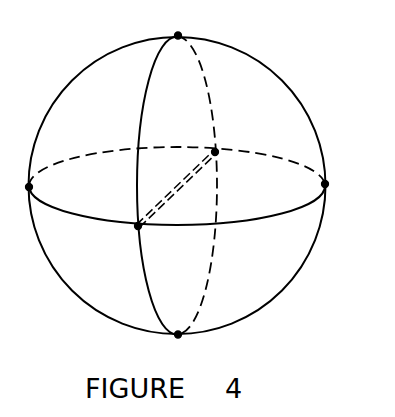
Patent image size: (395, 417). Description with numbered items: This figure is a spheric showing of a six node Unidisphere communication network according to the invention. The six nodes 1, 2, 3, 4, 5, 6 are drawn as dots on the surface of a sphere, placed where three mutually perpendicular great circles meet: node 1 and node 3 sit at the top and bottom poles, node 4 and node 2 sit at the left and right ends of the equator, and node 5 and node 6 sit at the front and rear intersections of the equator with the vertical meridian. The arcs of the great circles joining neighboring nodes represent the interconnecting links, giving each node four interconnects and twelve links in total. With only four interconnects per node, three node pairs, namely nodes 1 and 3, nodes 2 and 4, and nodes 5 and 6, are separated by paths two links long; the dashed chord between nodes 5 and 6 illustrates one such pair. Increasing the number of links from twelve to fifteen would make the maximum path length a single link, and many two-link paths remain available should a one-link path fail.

The node 1 is at (178, 36).
The node 2 is at (325, 184).
The node 3 is at (178, 334).
The node 4 is at (29, 187).
The node 5 is at (138, 226).
The node 6 is at (215, 152).